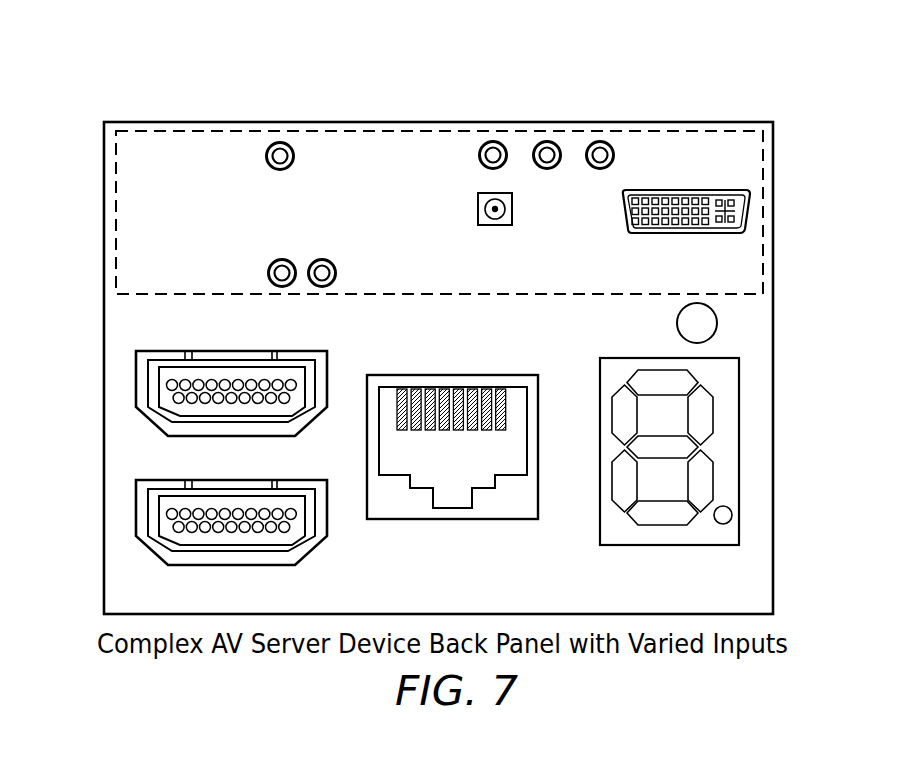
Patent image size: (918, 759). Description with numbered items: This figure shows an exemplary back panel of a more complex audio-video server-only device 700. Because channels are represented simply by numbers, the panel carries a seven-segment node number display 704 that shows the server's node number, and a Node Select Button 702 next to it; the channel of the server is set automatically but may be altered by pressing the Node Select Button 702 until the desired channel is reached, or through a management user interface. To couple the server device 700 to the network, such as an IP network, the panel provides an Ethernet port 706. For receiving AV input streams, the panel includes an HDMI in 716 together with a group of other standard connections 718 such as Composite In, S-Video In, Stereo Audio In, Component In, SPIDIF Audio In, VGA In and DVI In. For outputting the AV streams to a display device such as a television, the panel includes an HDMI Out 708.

The server device 700 is at (203, 103).
The standard connections 718 is at (763, 193).
The node select button 702 is at (717, 322).
The HDMI in 716 is at (137, 370).
The HDMI out 708 is at (137, 502).
The Ethernet port 706 is at (527, 521).
The seven-segment node number display 704 is at (730, 443).